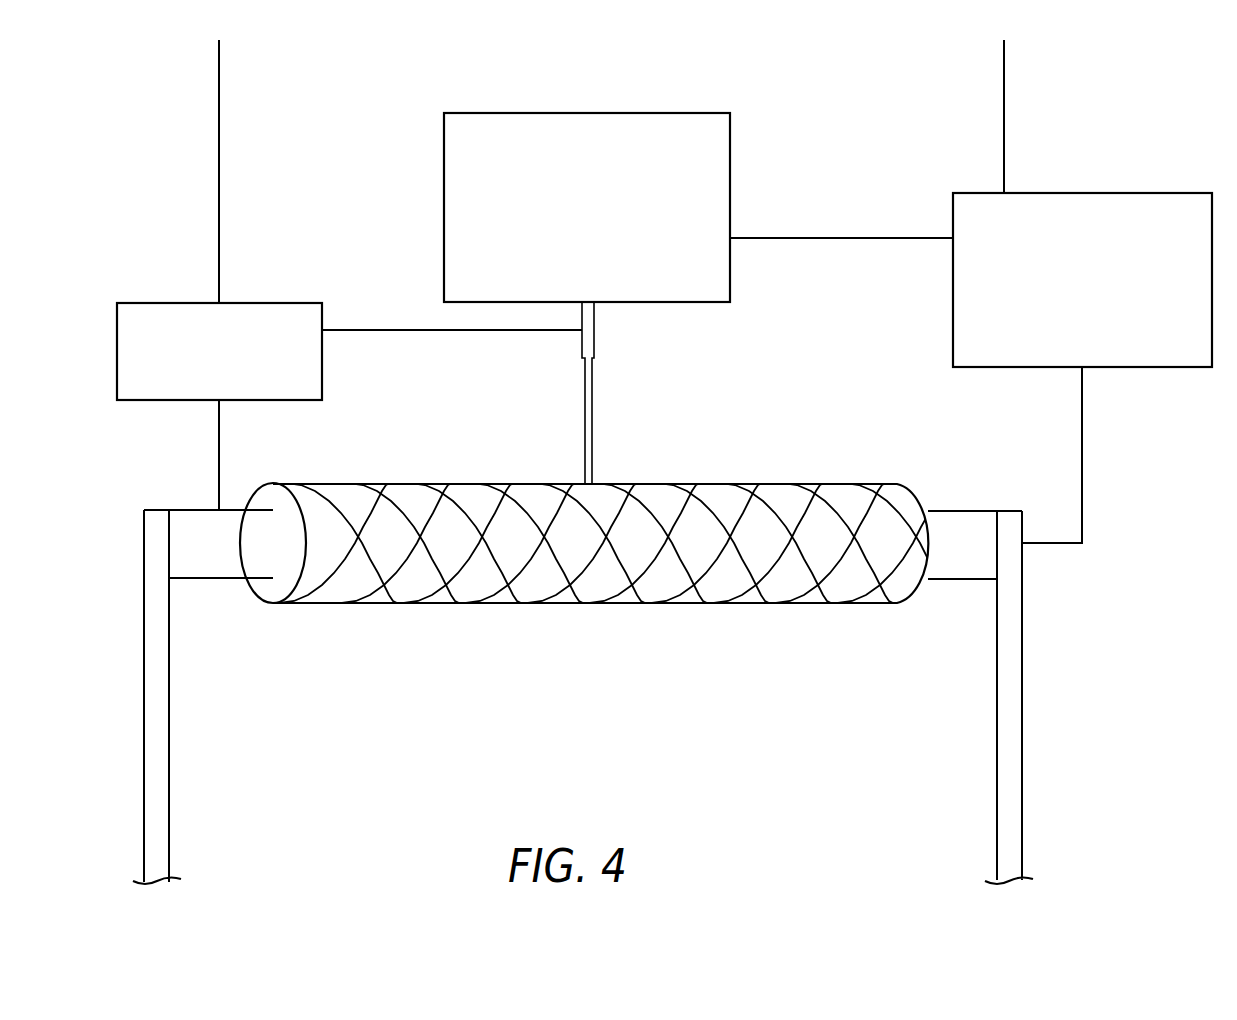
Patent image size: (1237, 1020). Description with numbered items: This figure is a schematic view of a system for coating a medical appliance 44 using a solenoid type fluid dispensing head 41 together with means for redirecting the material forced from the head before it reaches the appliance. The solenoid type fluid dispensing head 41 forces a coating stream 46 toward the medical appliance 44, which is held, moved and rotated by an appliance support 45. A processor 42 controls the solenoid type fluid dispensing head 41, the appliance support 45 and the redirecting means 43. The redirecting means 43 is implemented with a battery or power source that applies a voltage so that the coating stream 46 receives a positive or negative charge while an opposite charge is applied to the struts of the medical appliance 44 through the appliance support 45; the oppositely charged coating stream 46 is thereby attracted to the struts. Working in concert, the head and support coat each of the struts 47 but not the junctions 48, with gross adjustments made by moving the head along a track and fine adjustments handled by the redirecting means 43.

The solenoid type fluid dispensing head 41 is at (570, 225).
The processor 42 is at (1065, 303).
The redirecting means 43 is at (202, 374).
The medical appliance 44 is at (434, 553).
The appliance support 45 is at (1020, 690).
The coating stream 46 is at (592, 402).
The struts 47 is at (648, 572).
The junctions 48 is at (818, 583).